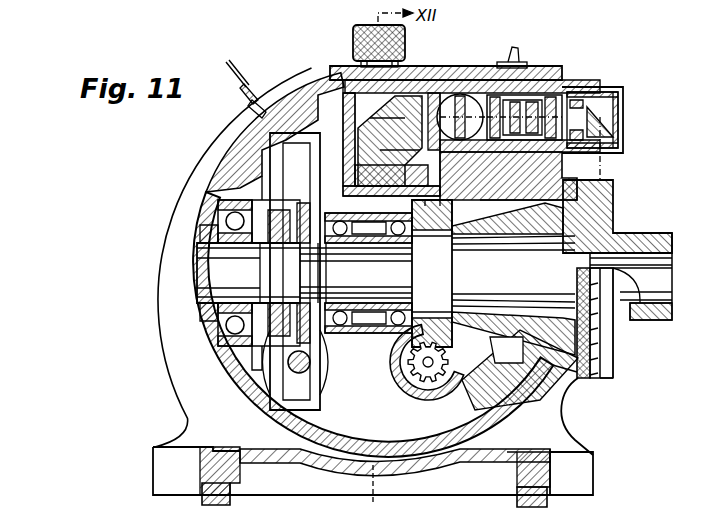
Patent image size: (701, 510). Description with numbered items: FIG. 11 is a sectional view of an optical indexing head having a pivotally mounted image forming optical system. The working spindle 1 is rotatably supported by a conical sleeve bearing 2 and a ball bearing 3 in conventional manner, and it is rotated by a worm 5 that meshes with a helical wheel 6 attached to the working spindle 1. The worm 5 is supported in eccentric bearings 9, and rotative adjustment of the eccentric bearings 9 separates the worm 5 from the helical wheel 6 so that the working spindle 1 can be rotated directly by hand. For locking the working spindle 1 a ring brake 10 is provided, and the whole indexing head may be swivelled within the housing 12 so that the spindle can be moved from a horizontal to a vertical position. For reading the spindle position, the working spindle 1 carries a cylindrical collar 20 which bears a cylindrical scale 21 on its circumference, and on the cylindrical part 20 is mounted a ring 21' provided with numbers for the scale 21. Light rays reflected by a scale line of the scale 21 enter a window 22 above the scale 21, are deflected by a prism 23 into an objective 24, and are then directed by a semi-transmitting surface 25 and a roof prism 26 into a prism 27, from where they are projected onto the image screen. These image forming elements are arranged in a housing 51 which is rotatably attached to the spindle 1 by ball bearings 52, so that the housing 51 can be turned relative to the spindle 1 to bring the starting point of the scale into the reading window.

The working spindle 1 is at (634, 241).
The conical sleeve bearing 2 is at (558, 330).
The ball bearing 3 is at (204, 333).
The worm 5 is at (407, 360).
The helical wheel 6 is at (438, 267).
The eccentric bearings 9 is at (457, 366).
The ring brake 10 is at (380, 269).
The housing 12 is at (195, 392).
The cylindrical collar 20 is at (603, 202).
The cylindrical scale 21 is at (610, 333).
The ring 21' is at (590, 336).
The window 22 is at (606, 153).
The prism 23 is at (620, 108).
The objective 24 is at (538, 88).
The semi-transmitting surface 25 is at (457, 100).
The roof prism 26 is at (403, 100).
The prism 27 is at (389, 184).
The housing 51 is at (336, 107).
The ball bearings 52 is at (368, 226).